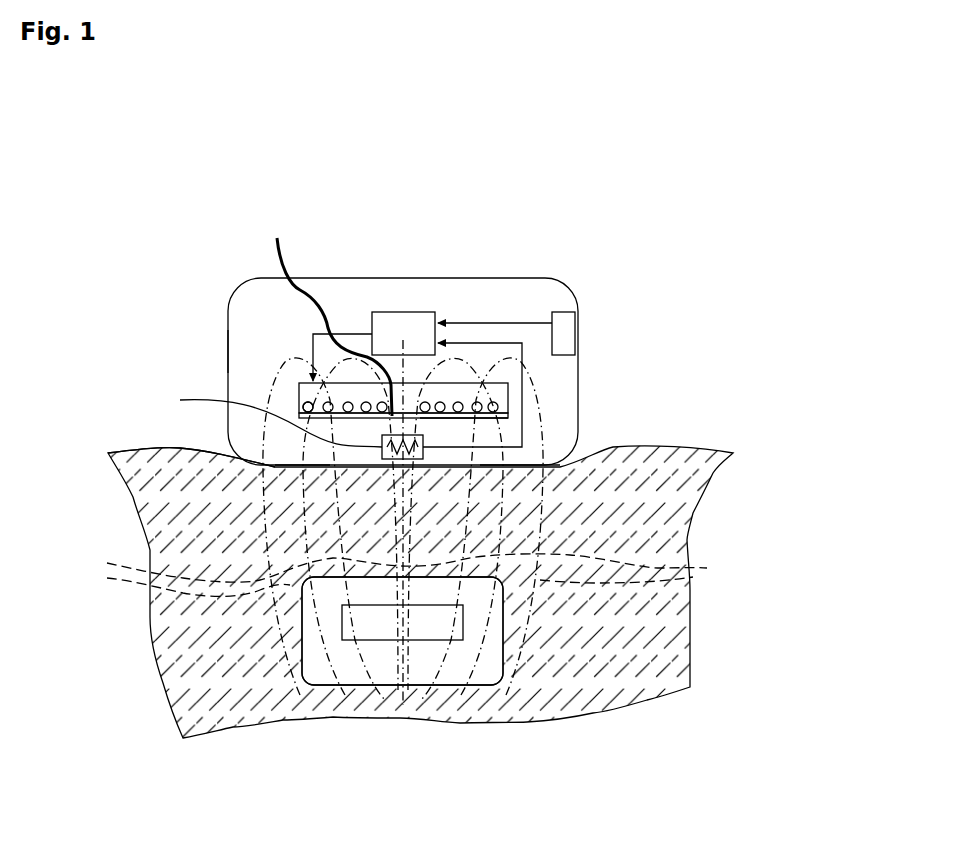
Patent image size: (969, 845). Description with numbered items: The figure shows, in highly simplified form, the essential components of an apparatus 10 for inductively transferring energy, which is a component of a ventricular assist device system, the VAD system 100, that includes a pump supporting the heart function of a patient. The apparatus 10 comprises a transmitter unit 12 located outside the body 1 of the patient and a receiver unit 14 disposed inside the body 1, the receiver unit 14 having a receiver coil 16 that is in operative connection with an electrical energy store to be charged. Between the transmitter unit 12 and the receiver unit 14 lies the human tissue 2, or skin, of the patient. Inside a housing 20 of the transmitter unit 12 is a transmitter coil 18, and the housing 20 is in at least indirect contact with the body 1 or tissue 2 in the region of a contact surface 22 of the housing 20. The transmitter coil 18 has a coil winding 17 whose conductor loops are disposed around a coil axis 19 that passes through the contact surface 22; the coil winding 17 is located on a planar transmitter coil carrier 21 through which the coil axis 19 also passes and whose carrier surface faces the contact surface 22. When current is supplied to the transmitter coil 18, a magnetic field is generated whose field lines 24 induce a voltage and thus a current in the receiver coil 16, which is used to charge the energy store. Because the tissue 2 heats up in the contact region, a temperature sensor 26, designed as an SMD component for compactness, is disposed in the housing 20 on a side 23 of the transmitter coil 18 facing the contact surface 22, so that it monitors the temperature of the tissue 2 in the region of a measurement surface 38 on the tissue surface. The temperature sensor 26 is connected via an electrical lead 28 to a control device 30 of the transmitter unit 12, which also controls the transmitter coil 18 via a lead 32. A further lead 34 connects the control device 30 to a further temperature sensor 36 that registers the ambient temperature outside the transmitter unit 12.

The body 1 is at (602, 744).
The tissue 2 is at (673, 648).
The apparatus 10 is at (560, 192).
The VAD system 100 is at (440, 424).
The transmitter unit 12 is at (544, 266).
The receiver unit 14 is at (426, 691).
The receiver coil 16 is at (402, 627).
The coil winding 17 is at (305, 403).
The transmitter coil 18 is at (509, 397).
The coil axis 19 is at (403, 482).
The housing 20 is at (228, 373).
The transmitter coil carrier 21 is at (323, 313).
The contact surface 22 is at (283, 467).
The side 23 is at (468, 423).
The field lines 24 is at (412, 522).
The temperature sensor 26 is at (290, 424).
The electrical lead 28 is at (523, 369).
The control device 30 is at (402, 312).
The lead 32 is at (335, 333).
The further lead 34 is at (480, 322).
The further temperature sensor 36 is at (577, 331).
The measurement surface 38 is at (523, 465).